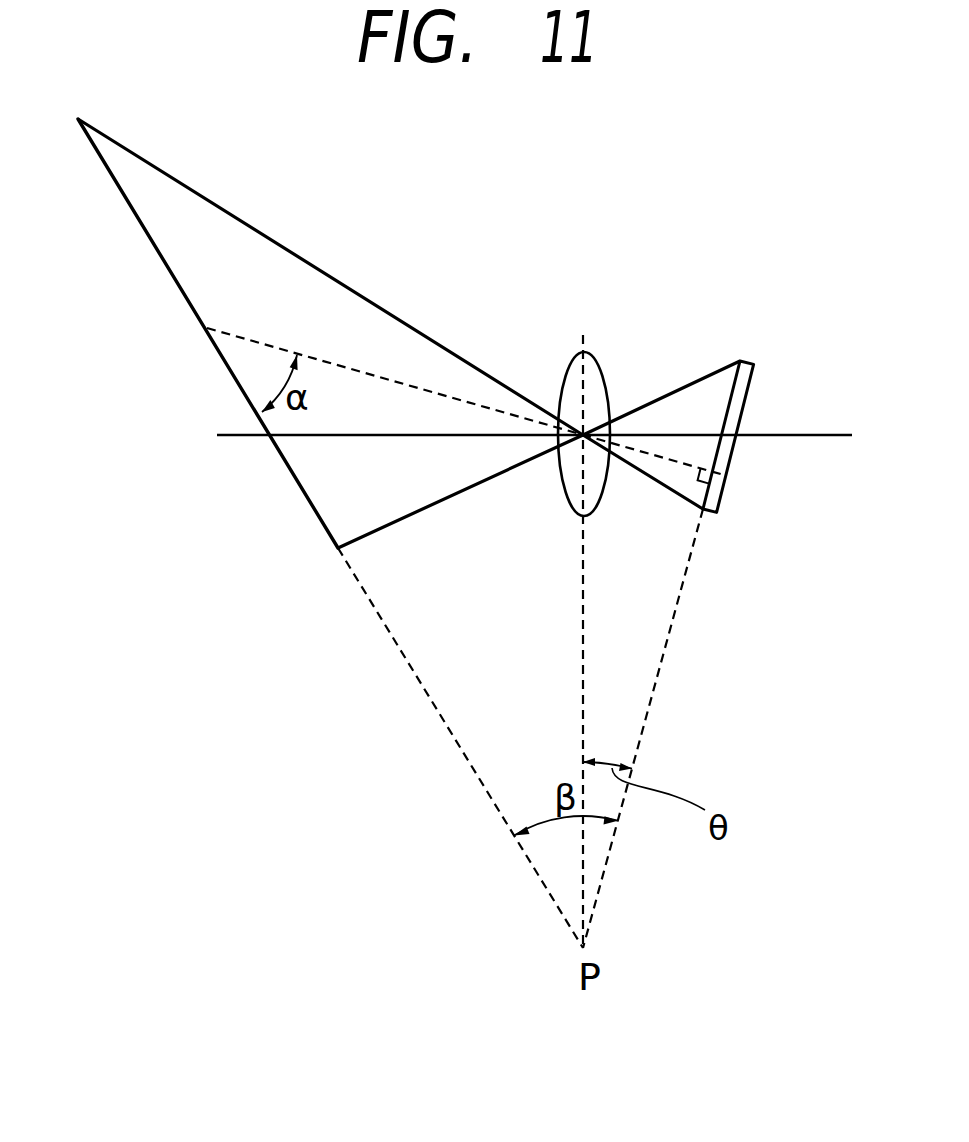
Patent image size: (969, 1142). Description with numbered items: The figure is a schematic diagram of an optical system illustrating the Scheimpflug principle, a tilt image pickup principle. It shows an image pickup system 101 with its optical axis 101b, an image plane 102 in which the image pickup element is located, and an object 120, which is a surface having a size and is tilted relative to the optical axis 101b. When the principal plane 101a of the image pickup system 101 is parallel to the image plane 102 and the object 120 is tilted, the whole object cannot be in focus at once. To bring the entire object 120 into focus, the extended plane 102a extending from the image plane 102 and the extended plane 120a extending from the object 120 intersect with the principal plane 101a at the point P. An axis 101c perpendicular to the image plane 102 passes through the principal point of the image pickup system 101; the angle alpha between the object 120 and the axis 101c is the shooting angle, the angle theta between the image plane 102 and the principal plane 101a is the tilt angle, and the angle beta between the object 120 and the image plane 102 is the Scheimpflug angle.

The object 120 is at (205, 328).
The extended plane 120a is at (418, 683).
The image pickup system 101 is at (601, 372).
The principal plane 101a is at (583, 705).
The optical axis 101b is at (815, 437).
The axis 101c is at (398, 382).
The image plane 102 is at (754, 379).
The extended plane 102a is at (673, 617).